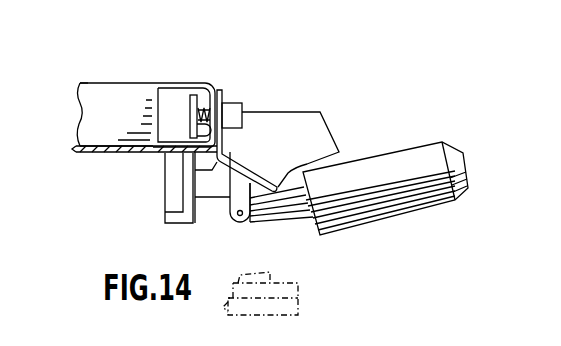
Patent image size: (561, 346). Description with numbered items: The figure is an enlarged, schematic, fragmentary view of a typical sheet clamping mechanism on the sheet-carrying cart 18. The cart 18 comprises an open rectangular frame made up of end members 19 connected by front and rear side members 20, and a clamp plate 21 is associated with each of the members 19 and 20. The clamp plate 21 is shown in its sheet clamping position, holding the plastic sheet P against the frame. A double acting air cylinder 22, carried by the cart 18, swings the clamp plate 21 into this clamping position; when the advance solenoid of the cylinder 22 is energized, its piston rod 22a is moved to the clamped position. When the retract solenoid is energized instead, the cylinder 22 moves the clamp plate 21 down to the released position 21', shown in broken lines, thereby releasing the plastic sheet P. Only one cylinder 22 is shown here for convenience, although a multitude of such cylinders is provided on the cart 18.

The sheet-carrying cart 18 is at (95, 78).
The side member 20 is at (128, 97).
The end member 19 is at (194, 83).
The plastic sheet P is at (122, 153).
The clamp plate 21 is at (197, 203).
The double acting air cylinder 22 is at (388, 172).
The piston rod 22a is at (271, 218).
The released position of clamp plate 21' is at (291, 293).